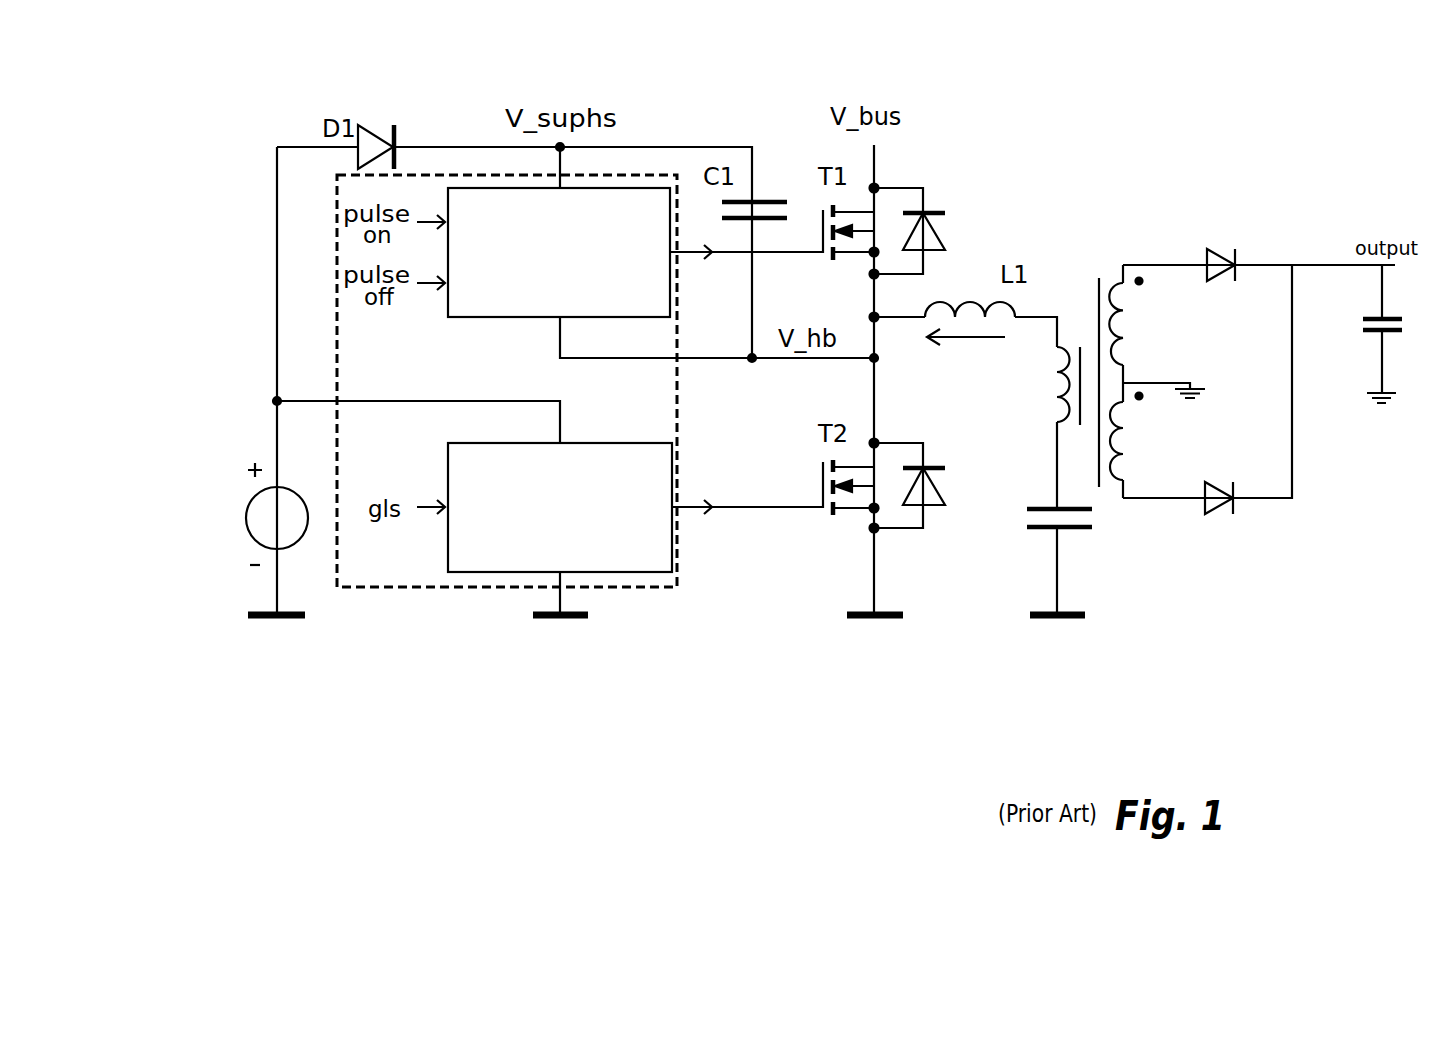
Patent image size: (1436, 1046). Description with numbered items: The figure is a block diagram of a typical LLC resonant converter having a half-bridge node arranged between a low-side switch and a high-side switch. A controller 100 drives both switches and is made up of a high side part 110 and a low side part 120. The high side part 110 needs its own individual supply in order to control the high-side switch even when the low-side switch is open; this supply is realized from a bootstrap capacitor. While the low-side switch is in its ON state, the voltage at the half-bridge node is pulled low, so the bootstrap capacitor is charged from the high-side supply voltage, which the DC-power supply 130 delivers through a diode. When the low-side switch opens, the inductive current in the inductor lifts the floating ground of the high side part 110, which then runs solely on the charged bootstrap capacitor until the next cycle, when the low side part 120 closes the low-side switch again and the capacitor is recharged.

The controller 100 is at (535, 413).
The high side part 110 is at (520, 297).
The low side part 120 is at (520, 562).
The DC-power supply 130 is at (237, 533).